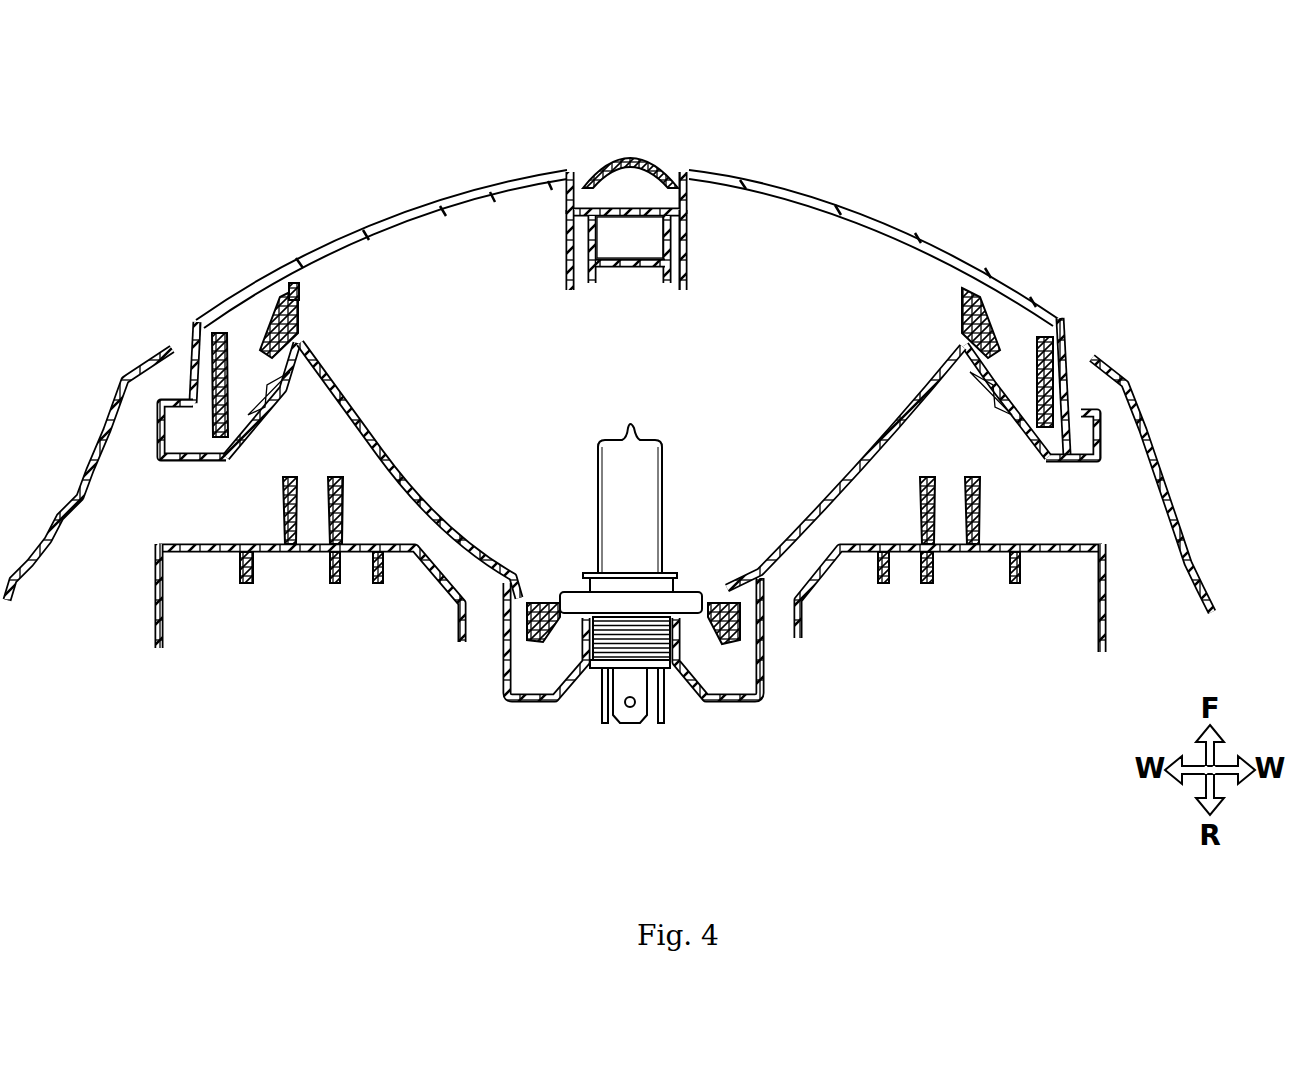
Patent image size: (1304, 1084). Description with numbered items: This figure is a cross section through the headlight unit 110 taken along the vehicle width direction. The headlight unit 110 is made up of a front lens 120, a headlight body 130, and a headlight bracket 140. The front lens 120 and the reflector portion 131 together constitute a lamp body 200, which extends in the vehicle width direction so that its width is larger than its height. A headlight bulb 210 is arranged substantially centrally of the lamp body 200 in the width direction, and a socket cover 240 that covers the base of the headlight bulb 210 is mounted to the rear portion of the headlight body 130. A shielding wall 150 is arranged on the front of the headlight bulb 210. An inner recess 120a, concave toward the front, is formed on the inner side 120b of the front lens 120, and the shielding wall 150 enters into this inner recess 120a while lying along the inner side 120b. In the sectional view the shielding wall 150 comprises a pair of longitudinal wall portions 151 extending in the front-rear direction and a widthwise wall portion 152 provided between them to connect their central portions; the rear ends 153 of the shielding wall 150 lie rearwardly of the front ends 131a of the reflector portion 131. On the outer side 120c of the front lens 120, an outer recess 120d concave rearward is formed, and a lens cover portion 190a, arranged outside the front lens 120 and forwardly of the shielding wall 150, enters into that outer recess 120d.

The headlight unit 110 is at (609, 447).
The front lens 120 is at (609, 347).
The inner recess 120a is at (640, 227).
The inner side 120b is at (481, 202).
The outer side 120c is at (491, 188).
The outer recess 120d is at (610, 170).
The headlight body 130 is at (630, 624).
The reflector portion 131 is at (632, 363).
The front ends 131a is at (300, 292).
The headlight bracket 140 is at (210, 553).
The shielding wall 150 is at (649, 254).
The longitudinal wall portions 151 is at (583, 258).
The widthwise wall portion 152 is at (640, 268).
The rear ends 153 is at (573, 292).
The lens cover portion 190a is at (645, 160).
The lamp body 200 is at (609, 347).
The headlight bulb 210 is at (628, 553).
The socket cover 240 is at (728, 700).